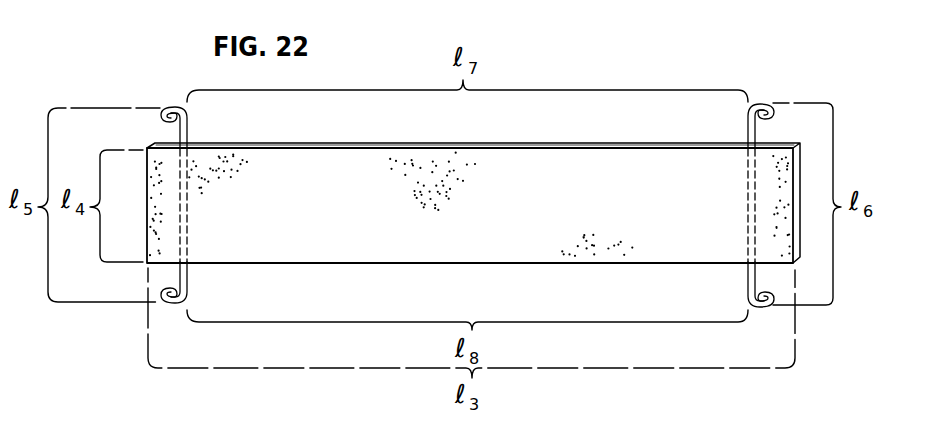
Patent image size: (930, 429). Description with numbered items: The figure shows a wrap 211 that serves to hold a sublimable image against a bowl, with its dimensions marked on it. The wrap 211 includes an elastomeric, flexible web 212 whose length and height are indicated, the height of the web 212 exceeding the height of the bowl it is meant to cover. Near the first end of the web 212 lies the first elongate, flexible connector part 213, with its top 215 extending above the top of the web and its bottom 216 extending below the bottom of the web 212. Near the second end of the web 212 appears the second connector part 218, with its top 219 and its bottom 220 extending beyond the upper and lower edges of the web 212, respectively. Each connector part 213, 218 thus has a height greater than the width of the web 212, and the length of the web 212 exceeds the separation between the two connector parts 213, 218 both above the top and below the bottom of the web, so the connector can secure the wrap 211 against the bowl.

The wrap 211 is at (637, 133).
The elastomeric, flexible web 212 is at (513, 187).
The first elongate, flexible connector part 213 is at (188, 128).
The top of first connector part 215 is at (176, 107).
The bottom of first connector part 216 is at (170, 303).
The second connector part 218 is at (748, 137).
The top of second connector part 219 is at (759, 102).
The bottom of second connector part 220 is at (757, 307).